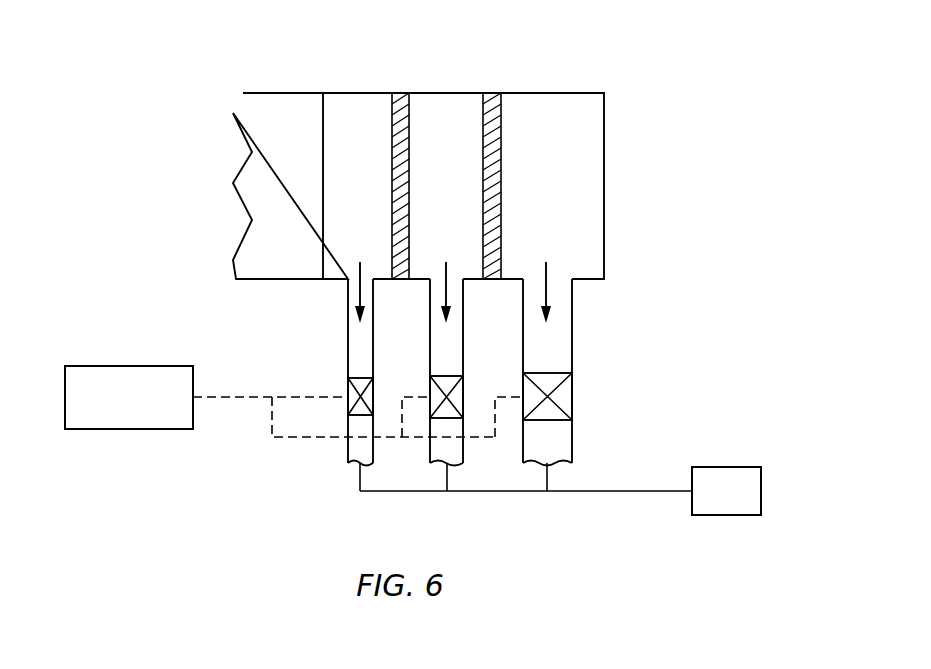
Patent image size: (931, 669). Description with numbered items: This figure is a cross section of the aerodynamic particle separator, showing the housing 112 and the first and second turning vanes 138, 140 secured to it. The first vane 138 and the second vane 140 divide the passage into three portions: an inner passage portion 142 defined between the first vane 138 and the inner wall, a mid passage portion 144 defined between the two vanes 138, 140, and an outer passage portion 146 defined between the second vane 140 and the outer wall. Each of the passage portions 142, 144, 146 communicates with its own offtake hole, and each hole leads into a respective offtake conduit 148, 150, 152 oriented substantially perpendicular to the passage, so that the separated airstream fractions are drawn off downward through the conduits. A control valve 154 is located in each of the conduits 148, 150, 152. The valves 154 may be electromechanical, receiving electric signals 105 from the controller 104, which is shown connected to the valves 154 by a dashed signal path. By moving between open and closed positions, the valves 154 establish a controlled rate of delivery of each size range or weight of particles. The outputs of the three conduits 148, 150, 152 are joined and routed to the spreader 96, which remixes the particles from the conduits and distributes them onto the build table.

The spreader 96 is at (740, 504).
The controller 104 is at (106, 410).
The electric signals 105 is at (235, 398).
The housing 112 is at (572, 75).
The first turning vane 138 is at (403, 138).
The second turning vane 140 is at (500, 134).
The inner passage portion 142 is at (338, 197).
The mid passage portion 144 is at (430, 197).
The outer passage portion 146 is at (530, 197).
The first offtake conduit 148 is at (362, 348).
The second offtake conduit 150 is at (442, 337).
The third offtake conduit 152 is at (557, 338).
The control valve 154 is at (375, 402).